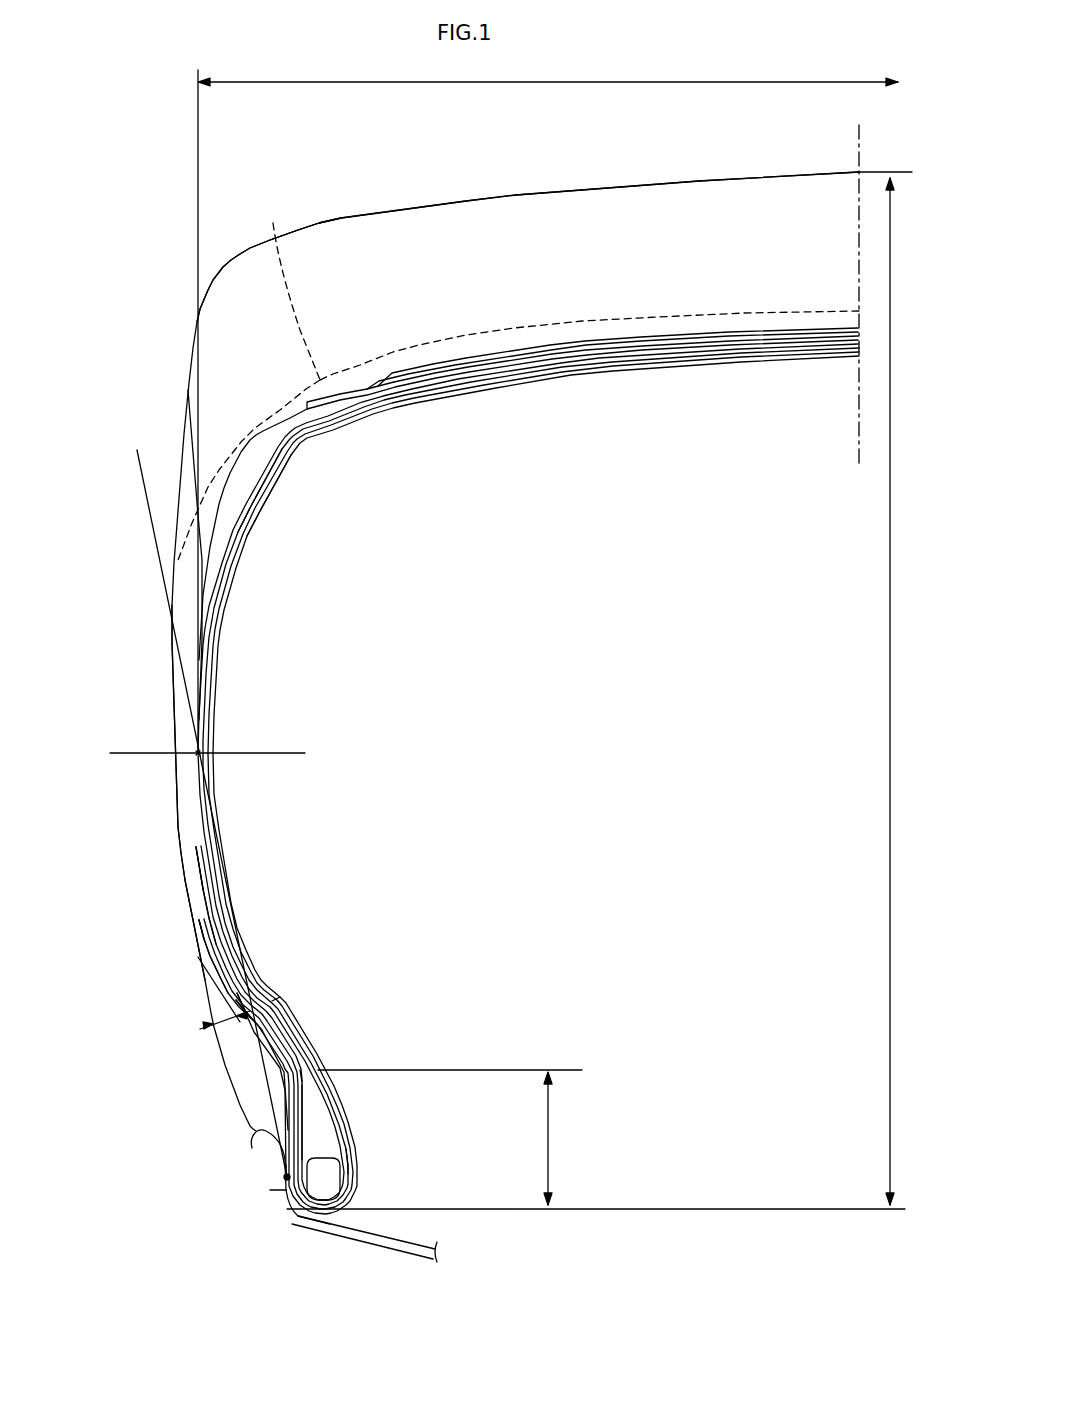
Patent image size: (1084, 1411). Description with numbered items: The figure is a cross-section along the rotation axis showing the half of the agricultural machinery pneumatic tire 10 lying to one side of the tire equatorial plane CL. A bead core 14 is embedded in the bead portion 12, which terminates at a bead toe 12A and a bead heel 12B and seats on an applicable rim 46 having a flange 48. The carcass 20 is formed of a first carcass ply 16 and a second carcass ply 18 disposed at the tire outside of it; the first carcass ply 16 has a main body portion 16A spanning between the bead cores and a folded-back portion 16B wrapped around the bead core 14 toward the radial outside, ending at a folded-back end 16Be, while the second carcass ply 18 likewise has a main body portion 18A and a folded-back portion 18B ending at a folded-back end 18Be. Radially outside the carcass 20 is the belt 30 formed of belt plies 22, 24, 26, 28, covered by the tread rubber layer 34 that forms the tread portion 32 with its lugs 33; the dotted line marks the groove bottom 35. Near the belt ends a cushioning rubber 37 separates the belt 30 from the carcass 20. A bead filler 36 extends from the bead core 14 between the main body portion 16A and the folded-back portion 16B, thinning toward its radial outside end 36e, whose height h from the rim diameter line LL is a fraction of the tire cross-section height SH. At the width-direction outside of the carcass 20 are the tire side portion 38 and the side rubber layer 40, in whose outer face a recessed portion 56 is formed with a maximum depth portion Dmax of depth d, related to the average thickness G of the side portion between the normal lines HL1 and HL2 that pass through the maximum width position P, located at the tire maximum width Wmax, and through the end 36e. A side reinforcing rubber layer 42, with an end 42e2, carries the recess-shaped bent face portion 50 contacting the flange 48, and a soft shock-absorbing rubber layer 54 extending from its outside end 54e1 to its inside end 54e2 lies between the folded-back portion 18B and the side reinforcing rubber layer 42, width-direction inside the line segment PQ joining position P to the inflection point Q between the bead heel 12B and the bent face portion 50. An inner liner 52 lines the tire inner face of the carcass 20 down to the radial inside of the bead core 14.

The agricultural machinery pneumatic tire 10 is at (160, 244).
The bead portion 12 is at (295, 1156).
The bead toe 12A is at (300, 1219).
The bead heel 12B is at (270, 1205).
The bead core 14 is at (330, 1178).
The first carcass ply 16 is at (474, 783).
The main body portion 16A is at (277, 495).
The folded-back portion 16B is at (218, 940).
The folded-back end 16Be is at (212, 915).
The second carcass ply 18 is at (479, 774).
The main body portion 18A is at (290, 450).
The folded-back portion 18B is at (202, 870).
The folded-back end 18Be is at (202, 845).
The carcass 20 is at (474, 779).
The belt ply 22 is at (407, 382).
The belt ply 24 is at (428, 378).
The belt ply 26 is at (458, 368).
The belt ply 28 is at (498, 362).
The belt 30 is at (582, 251).
The tread portion 32 is at (650, 175).
The lug 33 is at (352, 215).
The tread rubber layer 34 is at (750, 200).
The groove bottom 35 is at (248, 381).
The bead filler 36 is at (325, 1135).
The tire radial direction outside end of bead filler 36e is at (235, 1100).
The cushioning rubber 37 is at (253, 467).
The tire side portion 38 is at (166, 800).
The side rubber layer 40 is at (190, 815).
The side reinforcing rubber layer 42 is at (258, 1107).
The end of chafer rubber 42e2 is at (247, 1028).
The applicable rim 46 is at (407, 1268).
The flange 48 is at (278, 1170).
The bent face portion 50 is at (275, 1148).
The inner liner 52 is at (355, 1143).
The shock-absorbing rubber layer 54 is at (241, 1071).
The tire radial direction outside end of shock-absorbing rubber layer 54e1 is at (237, 993).
The tire radial direction inside end of shock-absorbing rubber layer 54e2 is at (282, 1180).
The recessed portion 56 is at (232, 983).
The maximum width position P is at (198, 752).
The inflection point Q is at (280, 1197).
The line segment PQ is at (272, 1120).
The average thickness of tire side portion G is at (280, 997).
The maximum depth of recessed portion d is at (225, 1028).
The maximum depth portion Dmax is at (228, 1012).
The height of bead filler outside end h is at (553, 1140).
The tire cross-section height SH is at (880, 702).
The tire maximum width Wmax is at (590, 82).
The normal line HL1 is at (270, 753).
The normal line HL2 is at (408, 1070).
The rim diameter line LL is at (630, 1212).
The tire equatorial plane CL is at (855, 147).